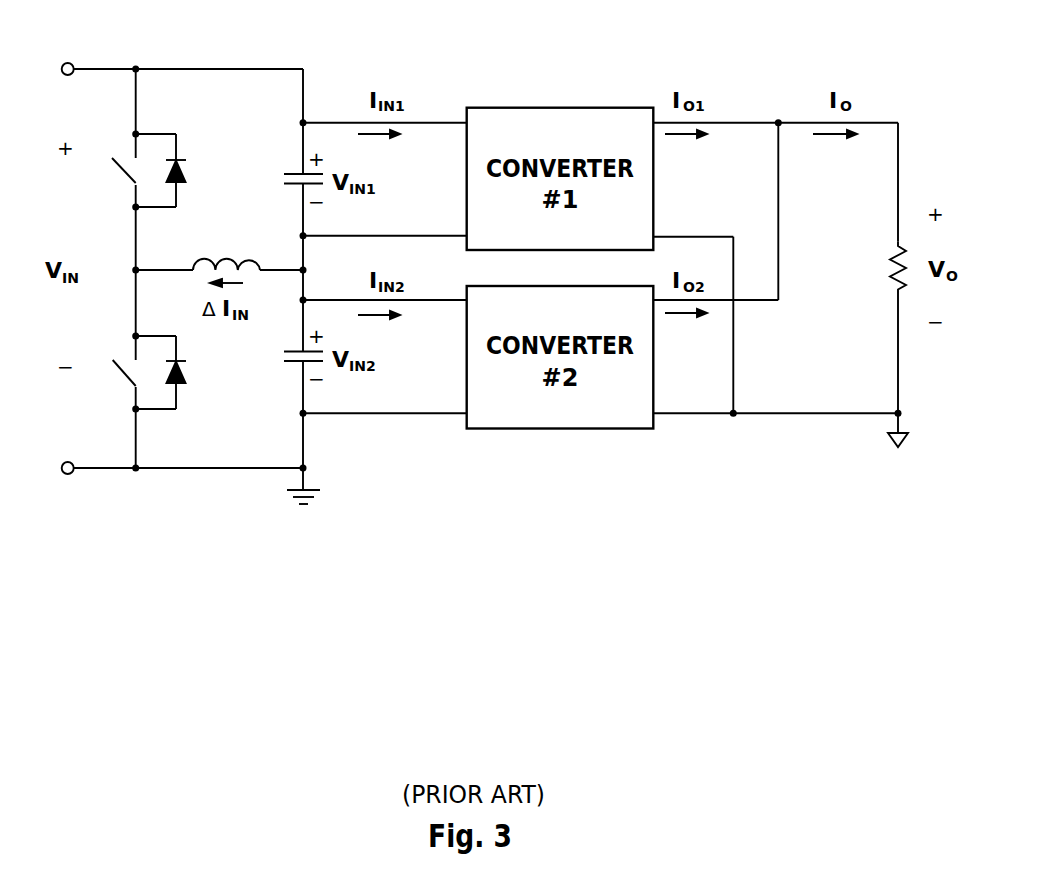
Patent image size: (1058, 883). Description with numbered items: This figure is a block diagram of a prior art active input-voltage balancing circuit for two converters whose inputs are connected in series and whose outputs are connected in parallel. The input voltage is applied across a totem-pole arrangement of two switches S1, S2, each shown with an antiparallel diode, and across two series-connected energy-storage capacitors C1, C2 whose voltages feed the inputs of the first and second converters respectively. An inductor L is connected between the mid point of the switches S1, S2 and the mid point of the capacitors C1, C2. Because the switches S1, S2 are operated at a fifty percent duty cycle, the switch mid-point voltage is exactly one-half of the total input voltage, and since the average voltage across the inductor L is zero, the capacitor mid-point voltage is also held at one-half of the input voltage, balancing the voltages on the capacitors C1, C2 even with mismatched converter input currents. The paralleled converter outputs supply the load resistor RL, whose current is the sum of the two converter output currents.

The switch S1 is at (135, 170).
The switch S2 is at (135, 372).
The inductor L is at (219, 250).
The capacitor C1 is at (284, 187).
The capacitor C2 is at (284, 363).
The load resistor RL is at (879, 267).